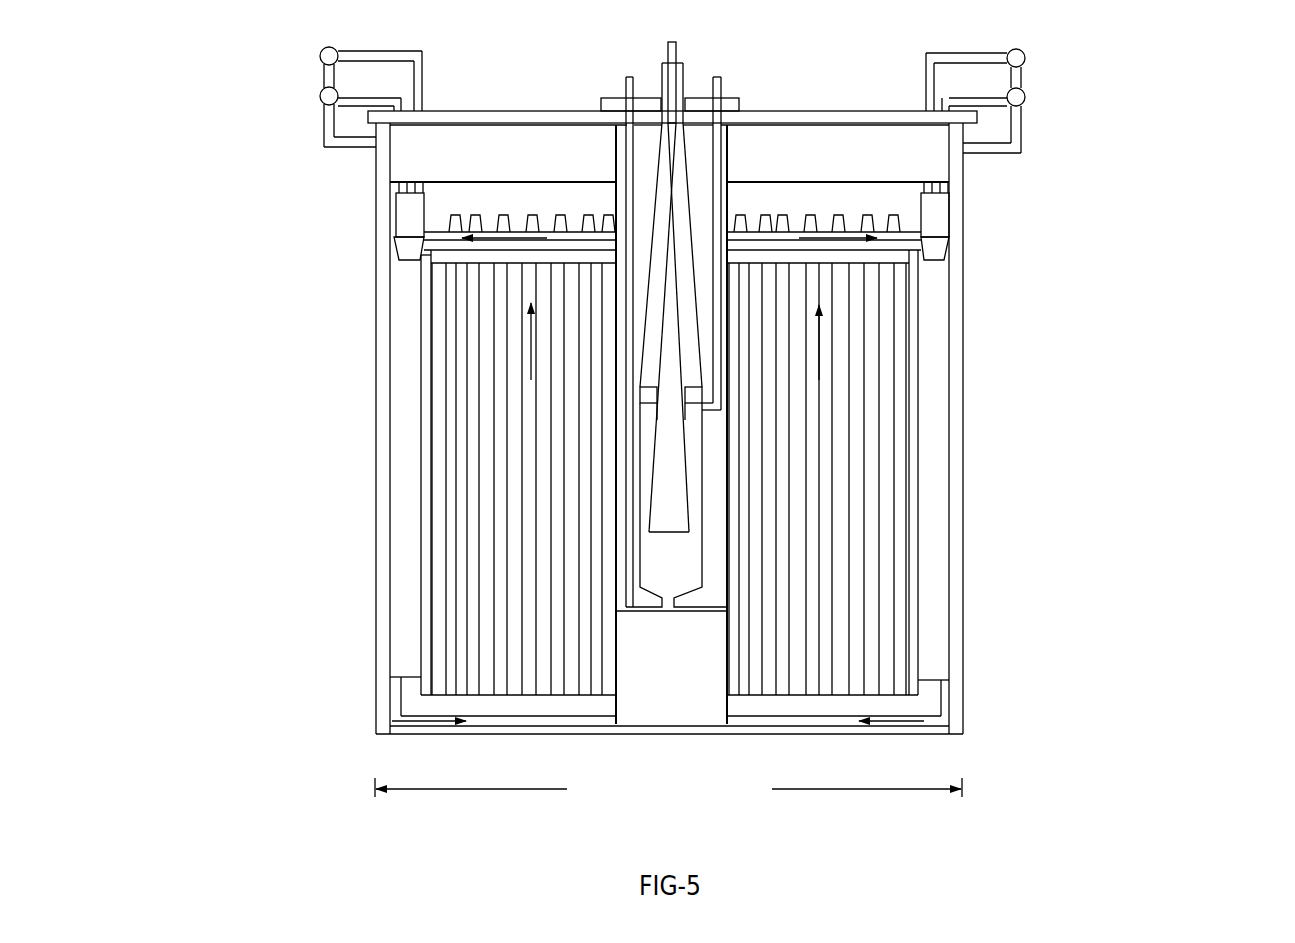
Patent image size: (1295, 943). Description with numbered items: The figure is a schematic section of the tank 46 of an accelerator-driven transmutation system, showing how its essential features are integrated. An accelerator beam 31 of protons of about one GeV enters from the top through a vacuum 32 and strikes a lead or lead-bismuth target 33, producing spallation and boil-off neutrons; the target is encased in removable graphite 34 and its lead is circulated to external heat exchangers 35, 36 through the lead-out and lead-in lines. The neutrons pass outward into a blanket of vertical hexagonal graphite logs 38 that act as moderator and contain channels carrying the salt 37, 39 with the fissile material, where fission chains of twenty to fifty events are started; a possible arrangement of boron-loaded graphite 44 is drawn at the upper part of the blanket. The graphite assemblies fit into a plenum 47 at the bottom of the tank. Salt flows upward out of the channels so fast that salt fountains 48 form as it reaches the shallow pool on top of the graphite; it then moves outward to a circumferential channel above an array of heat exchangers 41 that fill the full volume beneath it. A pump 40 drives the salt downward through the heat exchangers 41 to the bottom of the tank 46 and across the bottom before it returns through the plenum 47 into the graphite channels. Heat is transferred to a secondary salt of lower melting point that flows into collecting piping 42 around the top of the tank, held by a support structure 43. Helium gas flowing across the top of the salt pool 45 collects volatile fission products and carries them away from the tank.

The accelerator beam 31 is at (675, 518).
The vacuum 32 is at (698, 395).
The lead target 33 is at (697, 425).
The lead target encased in removable graphite 34 is at (718, 590).
The external heat exchanger 35 is at (618, 314).
The external heat exchanger 36 is at (727, 215).
The salt 37 is at (500, 530).
The vertical hexagonal graphite log 38 is at (488, 628).
The salt 39 is at (472, 443).
The pump 40 is at (403, 223).
The array of heat exchangers 41 is at (402, 342).
The collecting piping 42 is at (1027, 60).
The support structure 43 is at (326, 128).
The possible arrangement of boron-loaded graphite 44 is at (868, 252).
The salt pool 45 is at (520, 212).
The tank 46 is at (375, 713).
The plenum 47 is at (940, 731).
The salt fountains 48 is at (895, 222).